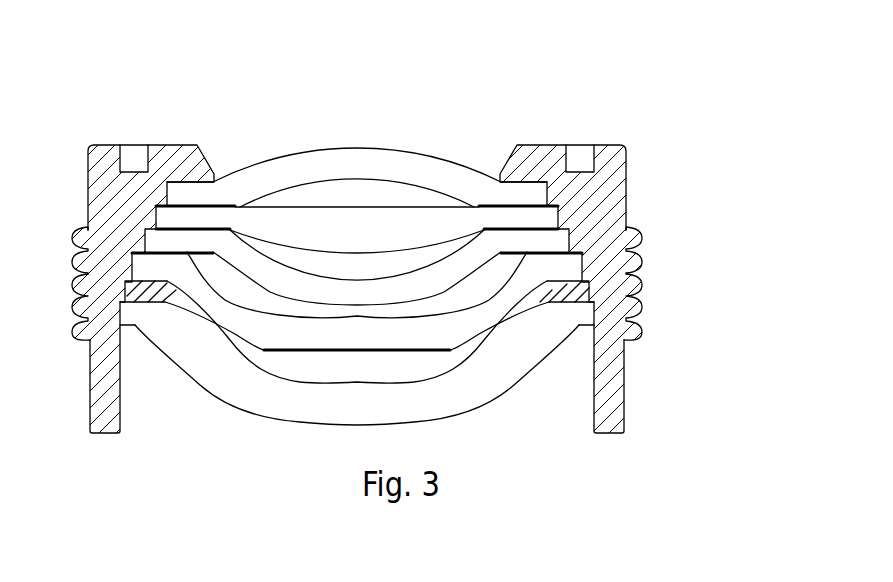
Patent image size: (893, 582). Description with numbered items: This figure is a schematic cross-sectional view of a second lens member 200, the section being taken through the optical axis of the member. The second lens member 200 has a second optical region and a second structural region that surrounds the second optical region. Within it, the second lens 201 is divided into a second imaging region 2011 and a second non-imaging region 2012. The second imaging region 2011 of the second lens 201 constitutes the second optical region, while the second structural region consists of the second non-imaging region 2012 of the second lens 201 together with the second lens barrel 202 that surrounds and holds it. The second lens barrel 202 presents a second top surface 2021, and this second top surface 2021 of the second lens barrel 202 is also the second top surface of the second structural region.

The second lens member 200 is at (629, 193).
The second lens 201 is at (301, 125).
The second imaging region 2011 is at (288, 172).
The second non-imaging region 2012 is at (188, 190).
The second top surface 2021 is at (548, 140).
The second lens barrel 202 is at (636, 322).